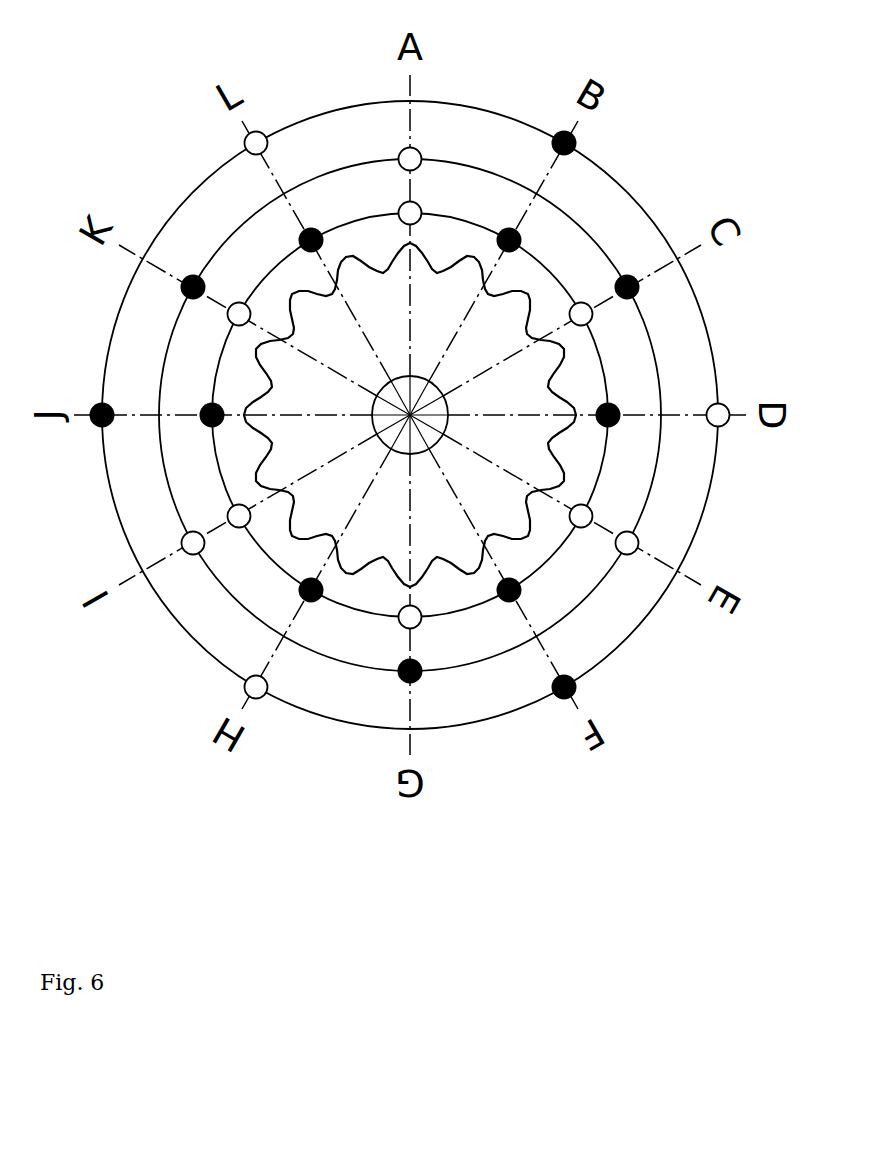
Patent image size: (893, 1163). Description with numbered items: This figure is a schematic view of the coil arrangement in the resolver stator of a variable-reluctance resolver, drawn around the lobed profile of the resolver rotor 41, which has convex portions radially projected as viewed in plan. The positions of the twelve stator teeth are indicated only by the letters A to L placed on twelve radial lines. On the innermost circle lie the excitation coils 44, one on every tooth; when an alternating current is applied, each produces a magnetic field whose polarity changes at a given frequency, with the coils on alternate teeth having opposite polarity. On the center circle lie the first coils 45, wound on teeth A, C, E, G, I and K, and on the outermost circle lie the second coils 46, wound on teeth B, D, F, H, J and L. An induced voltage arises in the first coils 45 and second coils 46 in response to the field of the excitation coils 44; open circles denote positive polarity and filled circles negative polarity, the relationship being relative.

The resolver rotor 41 is at (523, 297).
The excitation coils 44 is at (442, 215).
The first coils 45 is at (577, 217).
The second coils 46 is at (633, 197).